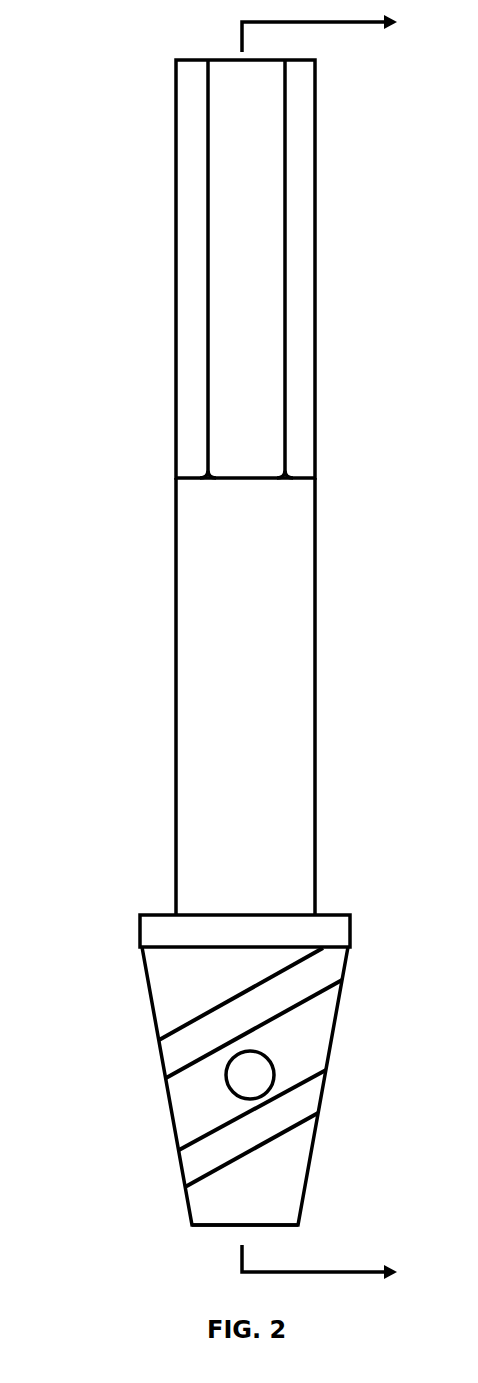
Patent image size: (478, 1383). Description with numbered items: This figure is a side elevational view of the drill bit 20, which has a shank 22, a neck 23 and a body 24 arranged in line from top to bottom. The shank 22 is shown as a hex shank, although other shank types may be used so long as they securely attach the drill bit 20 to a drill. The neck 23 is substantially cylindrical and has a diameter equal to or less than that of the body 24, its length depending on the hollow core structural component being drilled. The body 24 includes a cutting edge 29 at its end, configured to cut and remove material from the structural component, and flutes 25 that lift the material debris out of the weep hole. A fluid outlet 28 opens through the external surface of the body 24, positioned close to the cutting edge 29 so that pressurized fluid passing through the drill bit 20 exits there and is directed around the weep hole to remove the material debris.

The drill bit 20 is at (113, 122).
The shank 22 is at (175, 327).
The neck 23 is at (175, 722).
The body 24 is at (162, 1060).
The flutes 25 is at (172, 1102).
The fluid outlet 28 is at (265, 1075).
The cutting edge 29 is at (205, 1228).